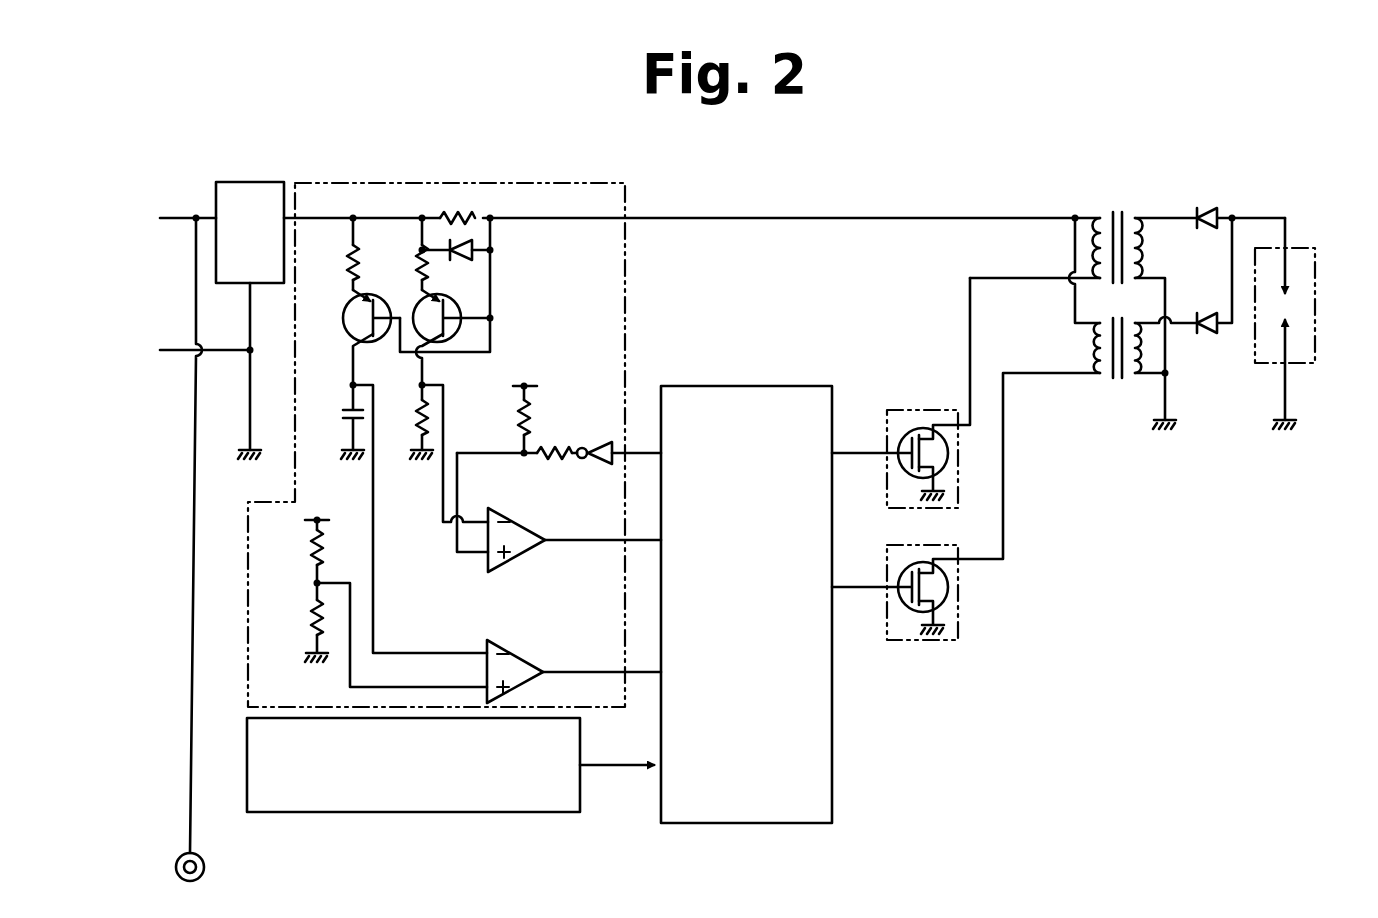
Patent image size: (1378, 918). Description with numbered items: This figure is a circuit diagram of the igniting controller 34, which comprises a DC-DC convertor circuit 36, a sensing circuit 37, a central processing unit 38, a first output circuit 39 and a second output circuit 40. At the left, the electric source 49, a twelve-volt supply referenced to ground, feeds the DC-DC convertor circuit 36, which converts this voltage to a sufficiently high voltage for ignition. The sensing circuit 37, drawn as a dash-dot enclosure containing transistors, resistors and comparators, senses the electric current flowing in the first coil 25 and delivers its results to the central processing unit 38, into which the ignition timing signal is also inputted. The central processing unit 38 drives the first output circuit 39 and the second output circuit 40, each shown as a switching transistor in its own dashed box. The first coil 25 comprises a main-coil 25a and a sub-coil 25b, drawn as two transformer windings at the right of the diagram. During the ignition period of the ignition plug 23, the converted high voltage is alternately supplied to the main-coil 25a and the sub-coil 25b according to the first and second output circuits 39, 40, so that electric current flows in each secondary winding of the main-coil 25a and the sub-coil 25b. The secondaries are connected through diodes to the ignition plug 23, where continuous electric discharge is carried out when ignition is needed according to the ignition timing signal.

The ignition plug 23 is at (1300, 378).
The first coil 25 is at (1127, 268).
The main-coil 25a is at (1144, 252).
The sub-coil 25b is at (1093, 352).
The igniting controller 34 is at (859, 719).
The DC-DC convertor circuit 36 is at (258, 181).
The sensing circuit 37 is at (503, 183).
The CPU 38 is at (742, 386).
The first output circuit 39 is at (932, 410).
The second output circuit 40 is at (940, 642).
The electric source 49 is at (84, 376).